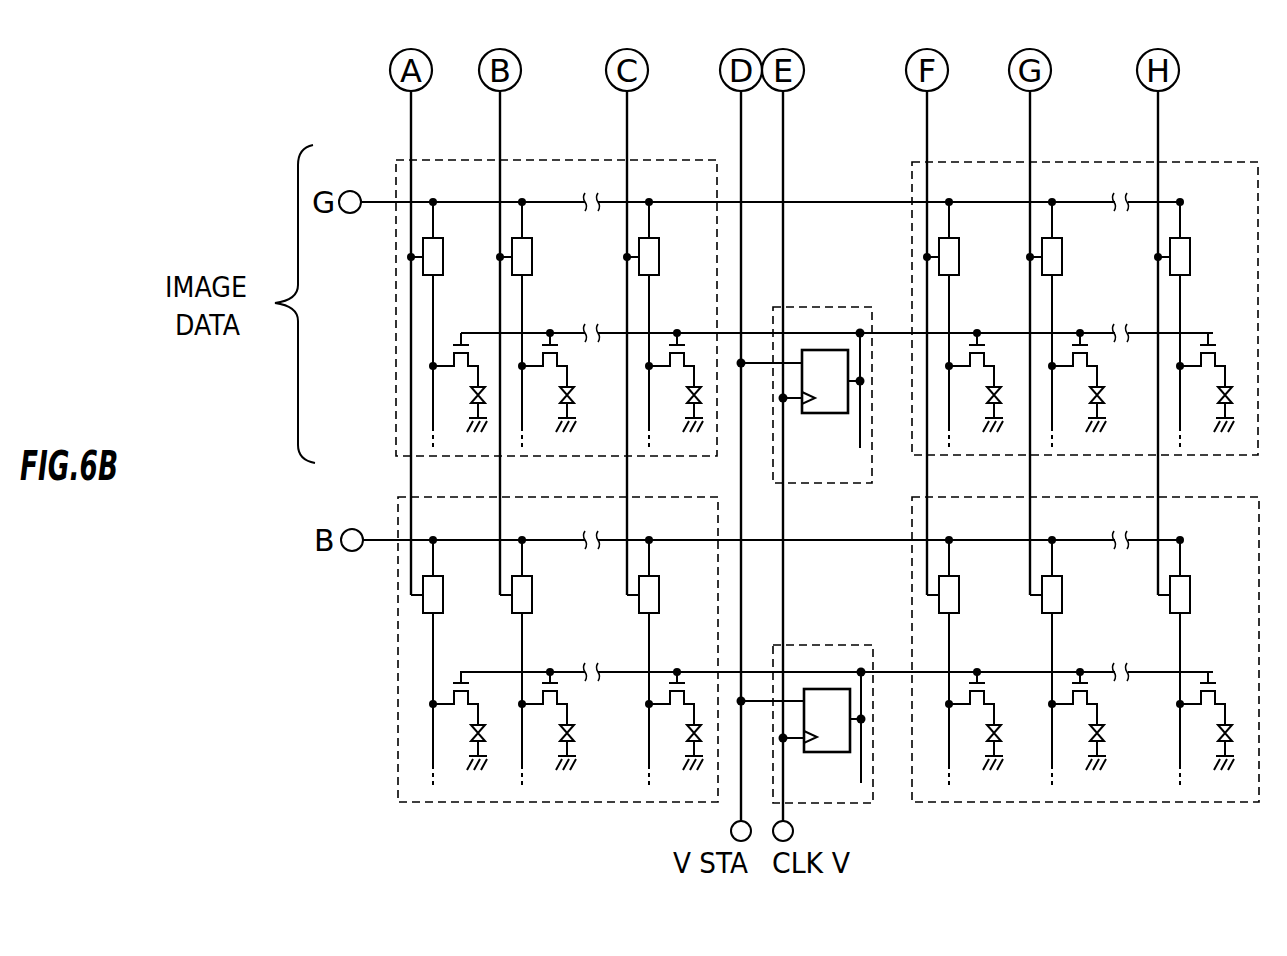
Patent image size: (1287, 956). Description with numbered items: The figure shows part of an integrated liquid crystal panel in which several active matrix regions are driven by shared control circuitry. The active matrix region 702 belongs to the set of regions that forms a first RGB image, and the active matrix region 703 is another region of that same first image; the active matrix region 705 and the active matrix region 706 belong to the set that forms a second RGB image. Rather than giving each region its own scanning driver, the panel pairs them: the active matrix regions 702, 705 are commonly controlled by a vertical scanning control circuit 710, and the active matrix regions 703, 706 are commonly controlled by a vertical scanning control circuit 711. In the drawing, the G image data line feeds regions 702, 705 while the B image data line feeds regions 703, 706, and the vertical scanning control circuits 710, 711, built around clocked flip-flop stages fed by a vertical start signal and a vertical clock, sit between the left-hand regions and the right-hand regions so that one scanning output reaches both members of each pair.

The active matrix region 702 is at (707, 197).
The active matrix region 703 is at (708, 533).
The active matrix region 705 is at (1248, 197).
The active matrix region 706 is at (1250, 533).
The vertical scanning control circuit 710 is at (845, 477).
The vertical scanning control circuit 711 is at (845, 795).